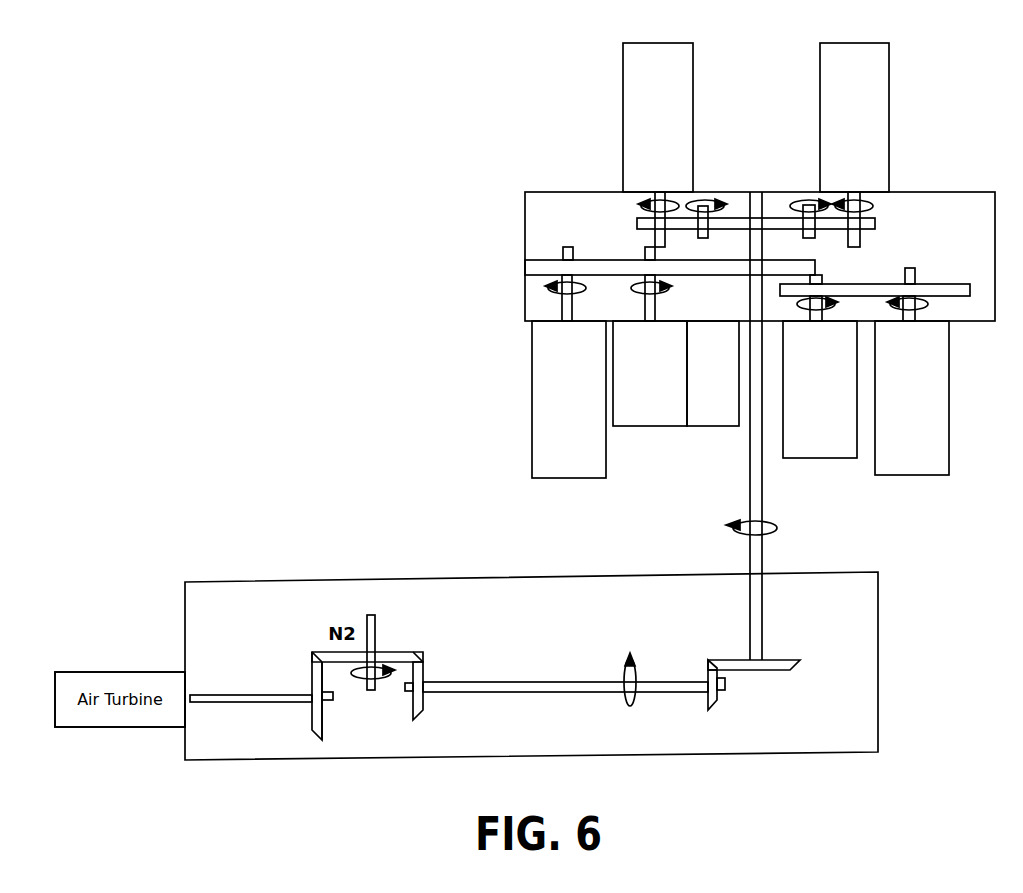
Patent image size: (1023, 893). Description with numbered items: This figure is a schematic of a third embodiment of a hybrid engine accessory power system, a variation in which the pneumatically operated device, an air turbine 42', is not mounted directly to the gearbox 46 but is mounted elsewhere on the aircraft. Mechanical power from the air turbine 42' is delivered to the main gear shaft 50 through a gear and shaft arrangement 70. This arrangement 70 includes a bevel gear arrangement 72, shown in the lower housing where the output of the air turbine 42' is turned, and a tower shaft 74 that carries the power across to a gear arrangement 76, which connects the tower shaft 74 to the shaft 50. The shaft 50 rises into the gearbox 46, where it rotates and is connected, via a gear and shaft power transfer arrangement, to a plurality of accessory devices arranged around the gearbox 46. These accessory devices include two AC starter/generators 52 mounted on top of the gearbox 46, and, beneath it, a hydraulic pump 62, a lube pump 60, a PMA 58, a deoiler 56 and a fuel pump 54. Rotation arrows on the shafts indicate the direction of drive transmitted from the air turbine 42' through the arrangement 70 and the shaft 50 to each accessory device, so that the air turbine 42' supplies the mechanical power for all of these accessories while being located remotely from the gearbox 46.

The air turbine 42' is at (120, 675).
The gearbox 46 is at (545, 206).
The main gear shaft 50 is at (763, 550).
The starter/generator 52 is at (623, 122).
The fuel pump 54 is at (949, 375).
The deoiler 56 is at (840, 458).
The PMA 58 is at (710, 426).
The lube pump 60 is at (648, 426).
The hydraulic pump 62 is at (532, 402).
The gear and shaft arrangement 70 is at (390, 730).
The bevel gear arrangement 72 is at (325, 652).
The tower shaft 74 is at (513, 682).
The gear arrangement 76 is at (766, 685).